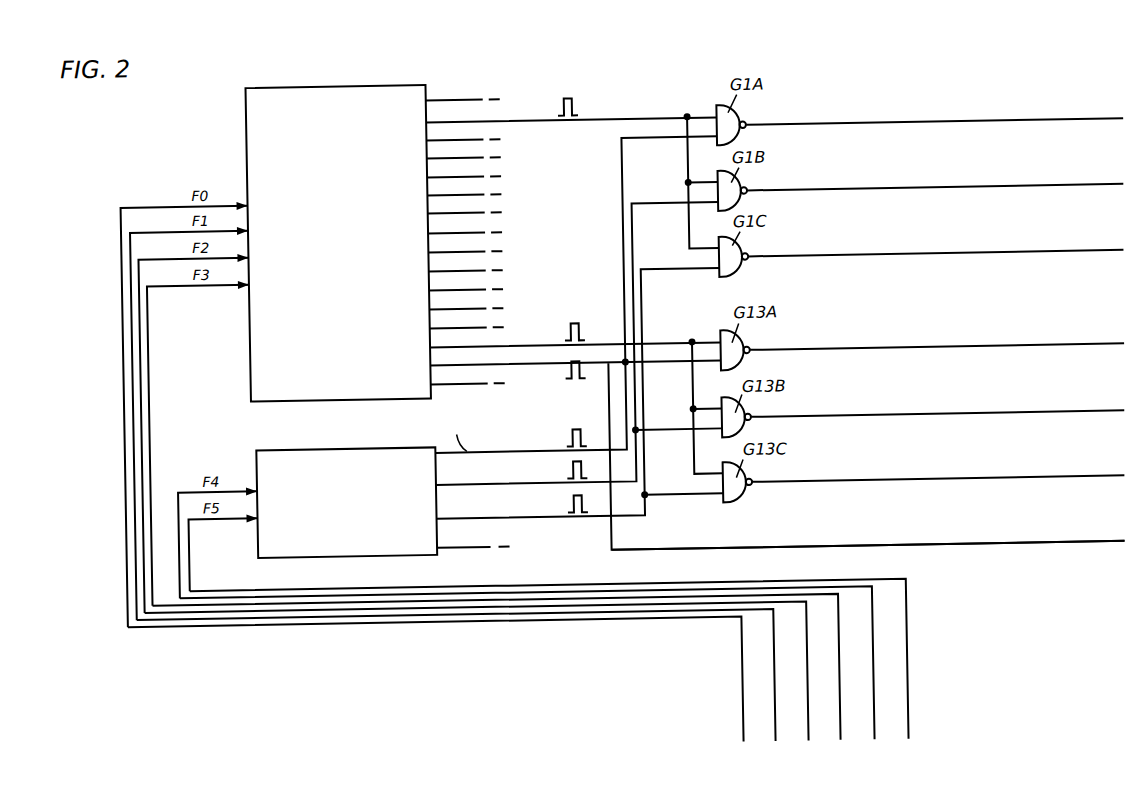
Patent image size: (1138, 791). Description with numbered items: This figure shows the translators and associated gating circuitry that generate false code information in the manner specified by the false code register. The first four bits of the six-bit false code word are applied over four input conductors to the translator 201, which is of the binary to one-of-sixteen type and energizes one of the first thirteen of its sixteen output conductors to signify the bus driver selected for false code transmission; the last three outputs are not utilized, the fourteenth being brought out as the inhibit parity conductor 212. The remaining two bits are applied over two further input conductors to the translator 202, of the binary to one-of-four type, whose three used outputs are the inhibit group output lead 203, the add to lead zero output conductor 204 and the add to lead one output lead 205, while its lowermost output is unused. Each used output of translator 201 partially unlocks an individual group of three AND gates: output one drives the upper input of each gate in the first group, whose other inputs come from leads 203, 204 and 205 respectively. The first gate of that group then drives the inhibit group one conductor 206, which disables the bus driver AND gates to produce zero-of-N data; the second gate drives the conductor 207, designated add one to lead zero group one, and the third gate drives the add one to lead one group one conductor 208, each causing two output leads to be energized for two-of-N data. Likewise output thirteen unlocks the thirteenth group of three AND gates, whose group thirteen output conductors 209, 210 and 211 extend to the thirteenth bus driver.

The translator 201 is at (338, 90).
The translator 202 is at (336, 552).
The output lead 203 is at (562, 450).
The output conductor 204 is at (555, 480).
The output lead 205 is at (546, 519).
The inhibit group 1 conductor 206 is at (1104, 127).
The conductor 207 is at (1108, 193).
The add 1 to lead 1 group 1 conductor 208 is at (1110, 259).
The group 13 output conductor 209 is at (1106, 352).
The group 13 output conductor 210 is at (1111, 419).
The group 13 output conductor 211 is at (1112, 484).
The 14 inhibit parity conductor 212 is at (1115, 549).